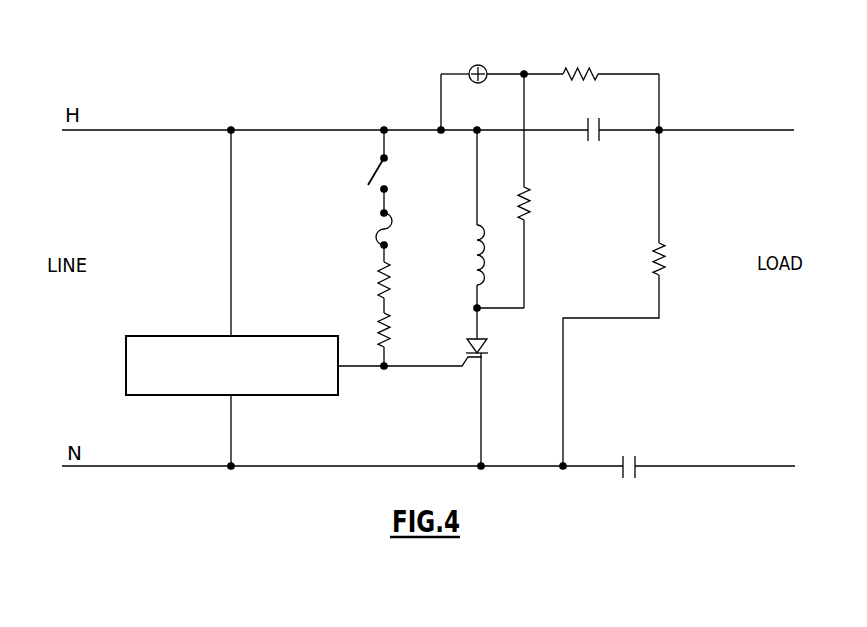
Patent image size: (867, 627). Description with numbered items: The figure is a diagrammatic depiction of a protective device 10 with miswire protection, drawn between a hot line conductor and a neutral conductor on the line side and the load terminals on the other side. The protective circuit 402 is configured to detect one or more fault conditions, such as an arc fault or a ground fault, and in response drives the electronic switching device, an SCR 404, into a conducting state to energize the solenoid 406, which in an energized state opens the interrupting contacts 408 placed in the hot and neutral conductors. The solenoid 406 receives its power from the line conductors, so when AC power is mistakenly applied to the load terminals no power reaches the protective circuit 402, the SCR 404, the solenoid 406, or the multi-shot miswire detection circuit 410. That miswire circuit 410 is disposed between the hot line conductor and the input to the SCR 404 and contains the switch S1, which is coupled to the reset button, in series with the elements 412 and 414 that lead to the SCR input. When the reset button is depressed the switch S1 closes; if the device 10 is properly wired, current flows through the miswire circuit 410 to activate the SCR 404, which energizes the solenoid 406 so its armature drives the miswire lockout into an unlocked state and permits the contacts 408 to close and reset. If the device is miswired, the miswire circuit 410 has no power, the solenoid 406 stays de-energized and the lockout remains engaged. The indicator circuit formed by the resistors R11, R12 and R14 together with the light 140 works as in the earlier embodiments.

The protective device 10 is at (645, 44).
The light 140 is at (485, 65).
The protective circuit 402 is at (165, 335).
The electronic switching device (SCR) 404 is at (487, 348).
The solenoid 406 is at (473, 233).
The interrupting contacts 408 is at (604, 114).
The multi-shot miswire detection circuit 410 is at (339, 246).
The resistor 412 is at (383, 273).
The resistor 414 is at (383, 324).
The switch S1 is at (390, 172).
The resistor R11 is at (633, 299).
The resistor R12 is at (612, 88).
The resistor R14 is at (546, 191).